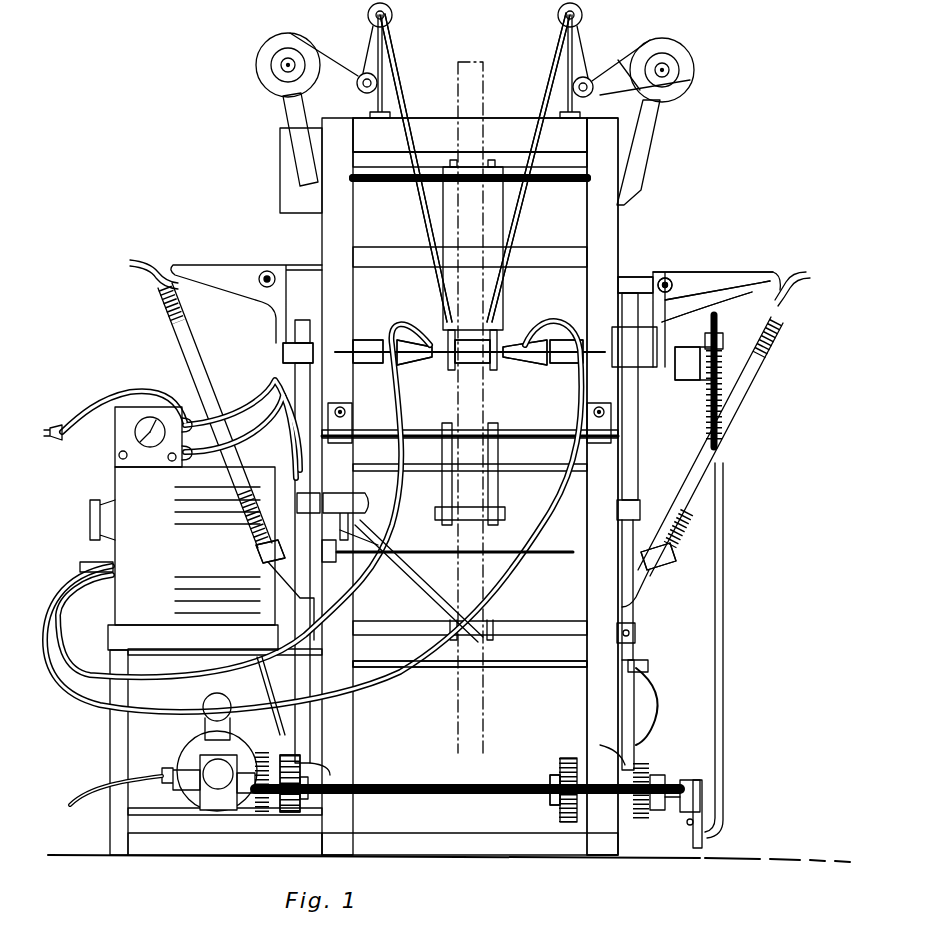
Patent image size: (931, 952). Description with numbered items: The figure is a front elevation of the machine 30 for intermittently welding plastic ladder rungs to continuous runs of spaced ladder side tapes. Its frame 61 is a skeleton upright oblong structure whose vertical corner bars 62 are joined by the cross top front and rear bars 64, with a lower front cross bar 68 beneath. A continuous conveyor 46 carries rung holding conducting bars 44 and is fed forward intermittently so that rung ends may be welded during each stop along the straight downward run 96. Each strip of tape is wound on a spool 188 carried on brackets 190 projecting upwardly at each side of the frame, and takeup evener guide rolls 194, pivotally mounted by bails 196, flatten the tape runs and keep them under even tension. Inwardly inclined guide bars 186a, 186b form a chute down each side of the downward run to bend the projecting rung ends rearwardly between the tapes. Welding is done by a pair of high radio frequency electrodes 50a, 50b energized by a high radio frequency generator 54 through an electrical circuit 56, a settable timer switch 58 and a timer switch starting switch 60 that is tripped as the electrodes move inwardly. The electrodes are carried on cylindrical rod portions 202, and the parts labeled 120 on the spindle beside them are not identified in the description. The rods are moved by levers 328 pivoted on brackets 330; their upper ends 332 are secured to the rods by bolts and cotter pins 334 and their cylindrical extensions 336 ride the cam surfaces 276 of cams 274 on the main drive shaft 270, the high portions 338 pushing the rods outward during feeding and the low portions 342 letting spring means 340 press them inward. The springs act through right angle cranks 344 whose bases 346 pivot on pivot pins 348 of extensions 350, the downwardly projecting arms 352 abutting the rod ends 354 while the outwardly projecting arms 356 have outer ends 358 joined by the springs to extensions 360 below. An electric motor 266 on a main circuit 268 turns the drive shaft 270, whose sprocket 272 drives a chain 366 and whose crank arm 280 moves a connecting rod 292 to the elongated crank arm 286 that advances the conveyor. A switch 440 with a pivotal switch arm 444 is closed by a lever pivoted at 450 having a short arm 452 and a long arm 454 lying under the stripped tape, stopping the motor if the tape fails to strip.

The machine 30 is at (275, 232).
The conducting bars 44 is at (474, 325).
The continuous conveyor 46 is at (484, 552).
The high radio frequency electrode 50a is at (428, 330).
The high radio frequency electrode 50b is at (552, 323).
The high radio frequency generator 54 is at (118, 595).
The electrical circuit 56 is at (90, 673).
The settable timer switch 58 is at (118, 441).
The timer switch starting switch 60 is at (642, 670).
The frame 61 is at (625, 203).
The vertical corner bars 62 is at (350, 200).
The cross top front and rear bars 64 is at (500, 130).
The lower front cross bar 68 is at (512, 668).
The straight downward run 96 is at (472, 291).
The cone 120 is at (444, 386).
The inwardly inclined guide bar 186a is at (432, 222).
The inwardly inclined guide bar 186b is at (520, 212).
The spool 188 is at (256, 68).
The brackets 190 is at (292, 113).
The takeup evener guide rolls 194 is at (590, 62).
The bails 196 is at (588, 30).
The cylindrical rod portions 202 is at (598, 325).
The electric motor 266 is at (196, 740).
The main circuit 268 is at (95, 796).
The main drive shaft 270 is at (442, 785).
The sprocket 272 is at (560, 762).
The cams 274 is at (648, 772).
The cam surfaces 276 is at (308, 800).
The crank arm 280 is at (700, 803).
The elongated crank arm 286 is at (703, 418).
The connecting rod 292 is at (724, 636).
The levers 328 is at (296, 397).
The brackets 330 is at (636, 630).
The upper ends 332 is at (713, 307).
The bolts and cotter pins 334 is at (673, 383).
The cylindrical extensions 336 is at (622, 768).
The high portions 338 is at (690, 826).
The spring means 340 is at (748, 388).
The low portions 342 is at (322, 770).
The right angle cranks 344 is at (715, 272).
The bases 346 is at (665, 278).
The pivot pins 348 is at (691, 270).
The extensions 350 is at (630, 275).
The downwardly projecting arms 352 is at (719, 291).
The ends 354 is at (285, 348).
The outwardly projecting arms 356 is at (222, 270).
The outer ends 358 is at (157, 265).
The extensions 360 is at (262, 552).
The chain 366 is at (562, 808).
The switch 440 is at (372, 548).
The pivotal switch arm 444 is at (358, 505).
The pivot 450 is at (368, 565).
The short arm 452 is at (348, 560).
The long arm 454 is at (455, 567).